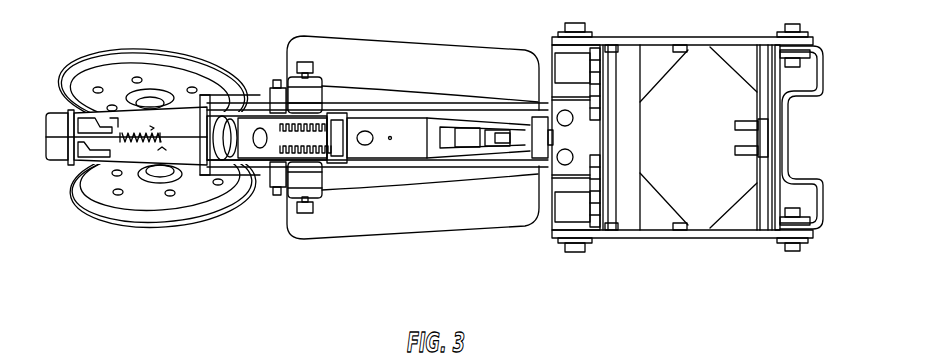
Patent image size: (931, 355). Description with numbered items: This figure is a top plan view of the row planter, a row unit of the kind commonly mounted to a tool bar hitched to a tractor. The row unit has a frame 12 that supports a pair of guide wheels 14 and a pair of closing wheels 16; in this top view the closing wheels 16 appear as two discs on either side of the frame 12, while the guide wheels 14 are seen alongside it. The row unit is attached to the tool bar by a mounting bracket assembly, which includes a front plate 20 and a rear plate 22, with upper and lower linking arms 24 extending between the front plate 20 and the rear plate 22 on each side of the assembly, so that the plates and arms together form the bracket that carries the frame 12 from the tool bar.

The frame 12 is at (262, 97).
The guide wheels 14 is at (305, 42).
The closing wheels 16 is at (100, 58).
The front plate 20 is at (795, 135).
The rear plate 22 is at (542, 100).
The upper and lower linking arms 24 is at (696, 37).